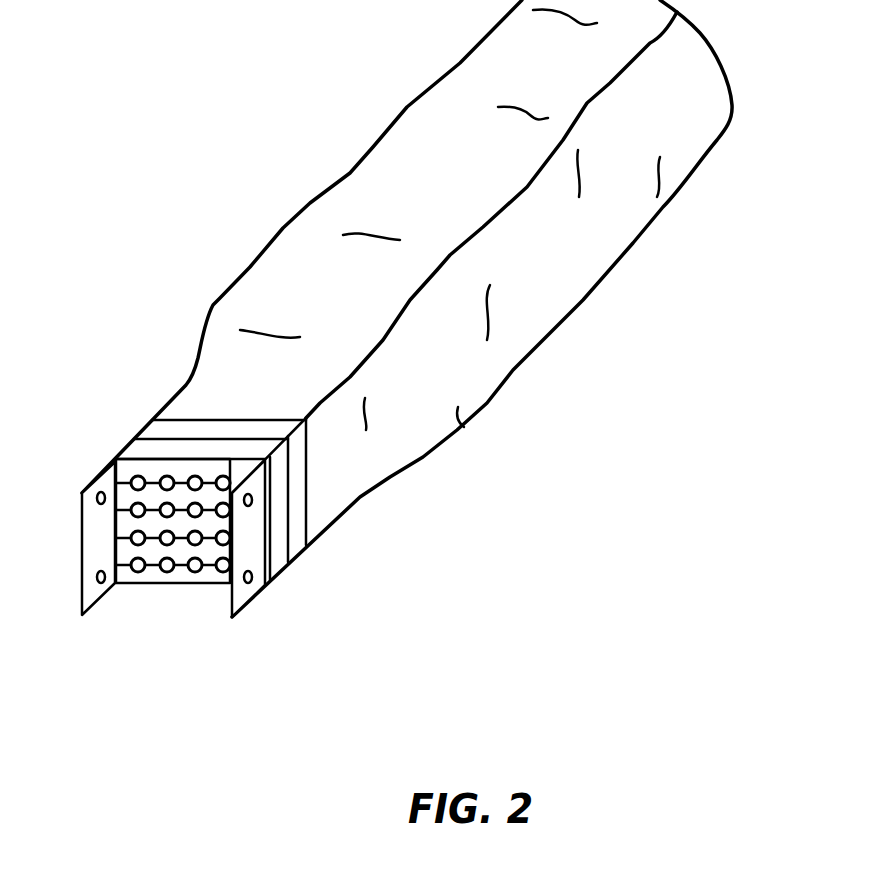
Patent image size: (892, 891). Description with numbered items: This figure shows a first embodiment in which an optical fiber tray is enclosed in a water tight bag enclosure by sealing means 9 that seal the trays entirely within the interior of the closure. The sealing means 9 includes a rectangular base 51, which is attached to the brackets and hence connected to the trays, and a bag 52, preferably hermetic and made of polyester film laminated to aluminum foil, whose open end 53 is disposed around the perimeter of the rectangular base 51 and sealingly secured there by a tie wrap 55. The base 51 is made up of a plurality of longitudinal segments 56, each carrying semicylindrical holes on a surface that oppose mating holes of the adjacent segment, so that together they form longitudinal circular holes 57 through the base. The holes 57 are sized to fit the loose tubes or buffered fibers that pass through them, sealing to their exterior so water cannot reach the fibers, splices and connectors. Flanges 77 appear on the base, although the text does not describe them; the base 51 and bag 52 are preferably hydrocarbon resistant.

The sealing means 9 is at (606, 366).
The rectangular base 51 is at (280, 540).
The bag 52 is at (387, 153).
The open end 53 is at (177, 427).
The tie wrap 55 is at (147, 443).
The longitudinal segments 56 is at (152, 573).
The longitudinal circular holes 57 is at (187, 577).
The mounting flange 77 is at (257, 560).